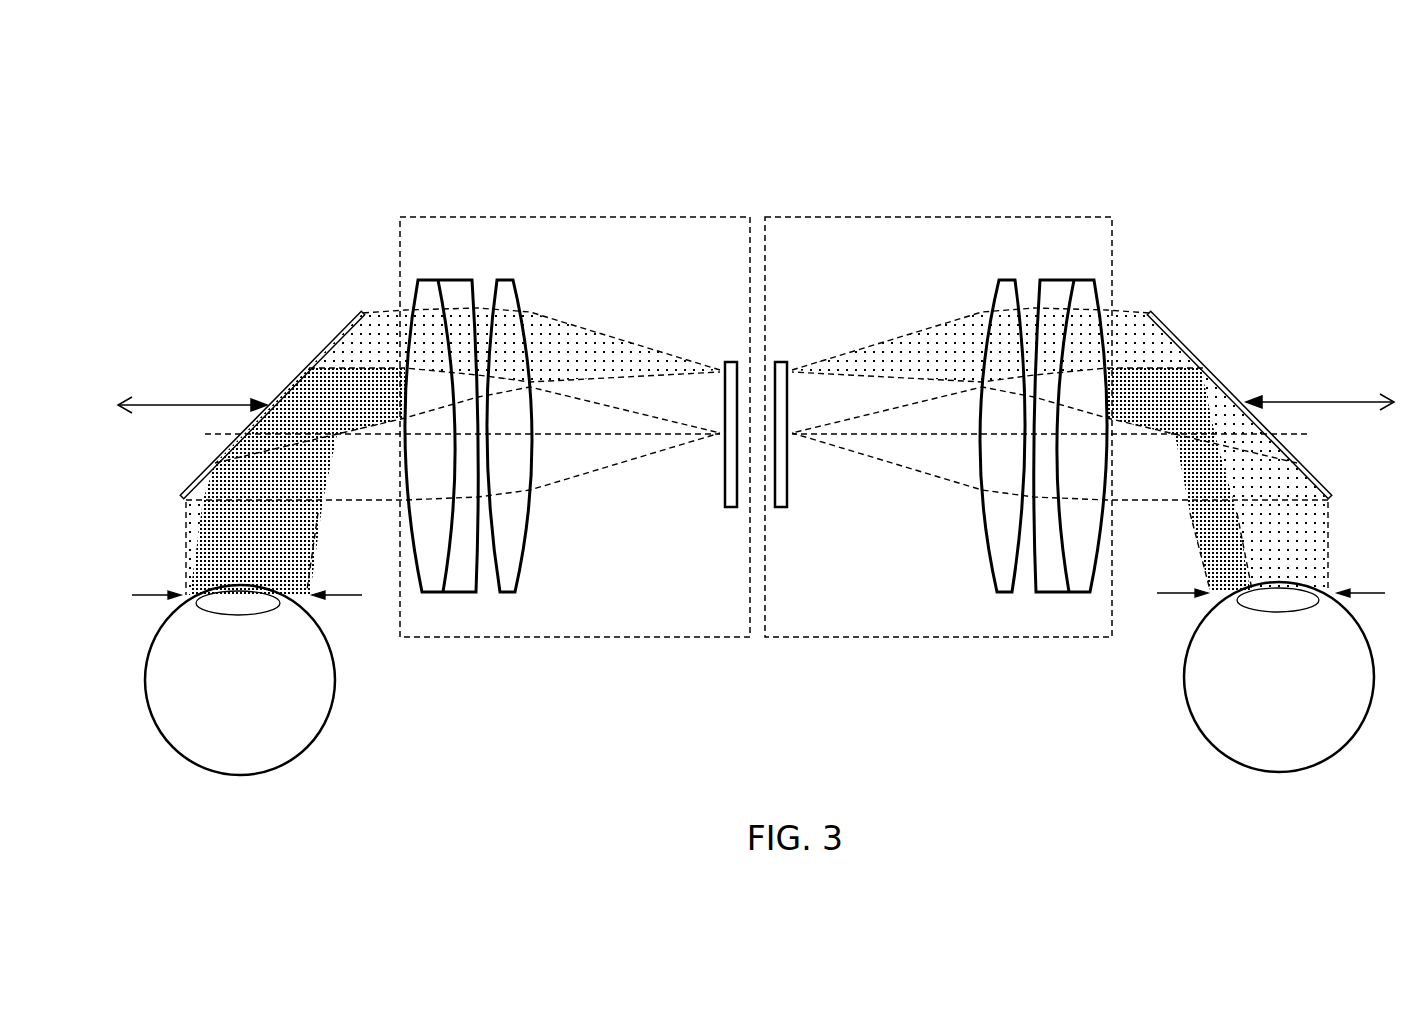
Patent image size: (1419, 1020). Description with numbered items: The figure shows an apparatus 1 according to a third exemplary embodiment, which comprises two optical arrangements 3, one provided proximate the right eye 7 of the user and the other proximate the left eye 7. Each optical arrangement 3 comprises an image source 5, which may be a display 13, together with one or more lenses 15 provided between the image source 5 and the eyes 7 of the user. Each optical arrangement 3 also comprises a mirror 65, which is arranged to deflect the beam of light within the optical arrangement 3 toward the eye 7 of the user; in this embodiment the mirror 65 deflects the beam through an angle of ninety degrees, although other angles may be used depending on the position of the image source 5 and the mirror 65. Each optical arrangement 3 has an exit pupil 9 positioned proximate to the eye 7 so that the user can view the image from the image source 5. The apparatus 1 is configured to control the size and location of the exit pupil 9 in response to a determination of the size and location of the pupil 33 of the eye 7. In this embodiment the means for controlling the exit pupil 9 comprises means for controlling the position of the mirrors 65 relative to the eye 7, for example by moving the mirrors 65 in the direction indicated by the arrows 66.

The apparatus 1 is at (822, 155).
The optical arrangement 3 is at (448, 217).
The image source 5 is at (727, 507).
The eye 7 is at (322, 730).
The exit pupil 9 is at (148, 596).
The display 13 is at (727, 362).
The lenses 15 is at (432, 592).
The pupil 33 is at (252, 618).
The mirror 65 is at (360, 310).
The arrows 66 is at (205, 404).